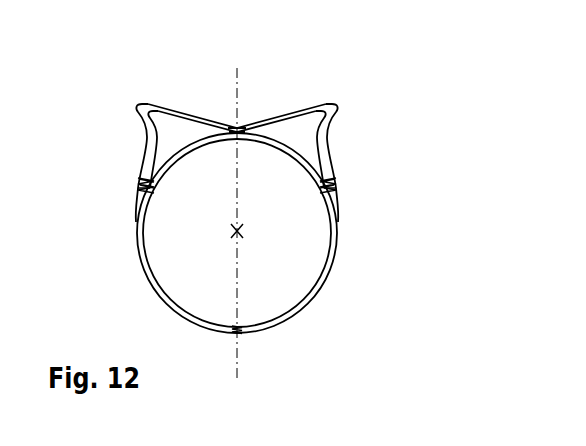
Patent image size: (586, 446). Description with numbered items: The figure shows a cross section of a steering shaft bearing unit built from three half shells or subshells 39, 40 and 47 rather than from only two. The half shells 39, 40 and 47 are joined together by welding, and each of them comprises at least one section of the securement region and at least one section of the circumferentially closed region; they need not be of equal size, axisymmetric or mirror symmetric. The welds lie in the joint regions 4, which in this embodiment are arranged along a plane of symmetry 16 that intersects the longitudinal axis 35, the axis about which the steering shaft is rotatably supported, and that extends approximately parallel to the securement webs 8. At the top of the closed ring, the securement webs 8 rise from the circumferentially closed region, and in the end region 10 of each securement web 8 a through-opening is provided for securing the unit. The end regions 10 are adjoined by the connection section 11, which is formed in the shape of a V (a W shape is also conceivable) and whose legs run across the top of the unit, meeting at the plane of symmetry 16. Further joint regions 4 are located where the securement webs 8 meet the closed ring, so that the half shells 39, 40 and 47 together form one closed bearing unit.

The joint region 4 is at (143, 182).
The securement web 8 is at (133, 188).
The end region 10 is at (136, 113).
The connection section 11 is at (191, 113).
The plane of symmetry 16 is at (238, 362).
The longitudinal axis 35 is at (246, 243).
The half shell 39 is at (347, 244).
The half shell 40 is at (125, 239).
The half shell 47 is at (251, 105).